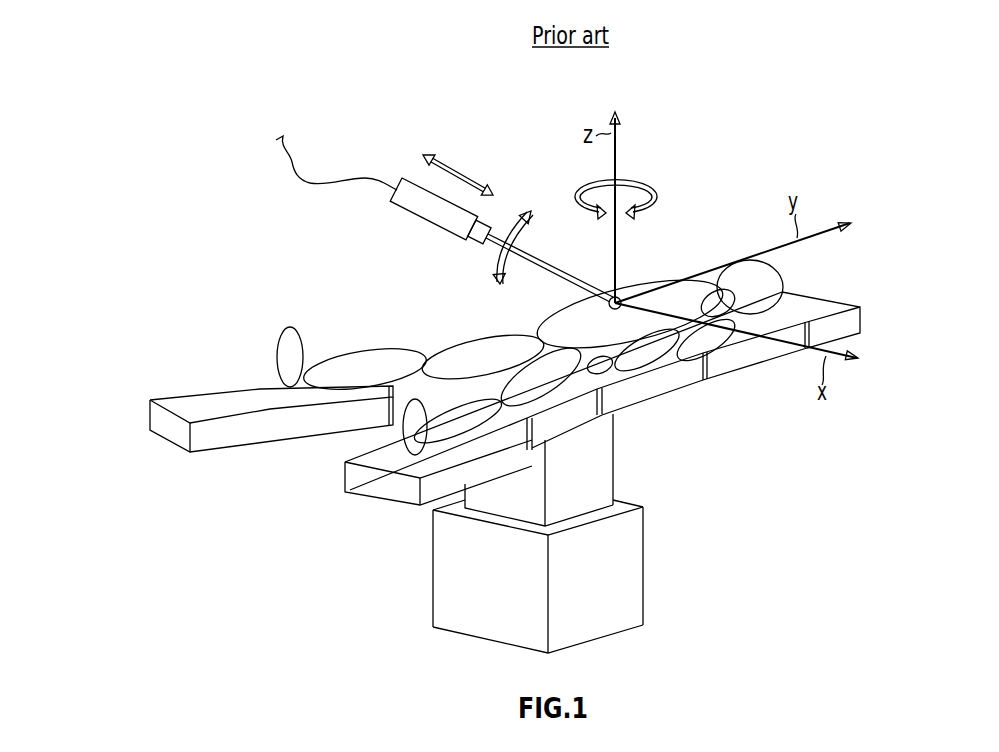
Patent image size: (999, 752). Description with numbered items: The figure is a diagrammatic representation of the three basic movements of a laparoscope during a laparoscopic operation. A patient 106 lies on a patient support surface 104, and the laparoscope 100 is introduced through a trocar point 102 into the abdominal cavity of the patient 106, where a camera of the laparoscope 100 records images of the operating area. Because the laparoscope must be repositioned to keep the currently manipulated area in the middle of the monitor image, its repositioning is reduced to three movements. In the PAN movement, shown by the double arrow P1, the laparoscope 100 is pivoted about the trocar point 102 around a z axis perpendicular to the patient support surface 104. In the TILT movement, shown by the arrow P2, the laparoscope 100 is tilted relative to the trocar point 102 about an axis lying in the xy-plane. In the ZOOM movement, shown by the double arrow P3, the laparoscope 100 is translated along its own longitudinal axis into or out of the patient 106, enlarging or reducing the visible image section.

The laparoscope 100 is at (427, 218).
The trocar point 102 is at (619, 298).
The patient support surface 104 is at (866, 338).
The patient 106 is at (657, 278).
The double arrow P1 is at (638, 182).
The arrow P2 is at (492, 262).
The double arrow P3 is at (468, 178).